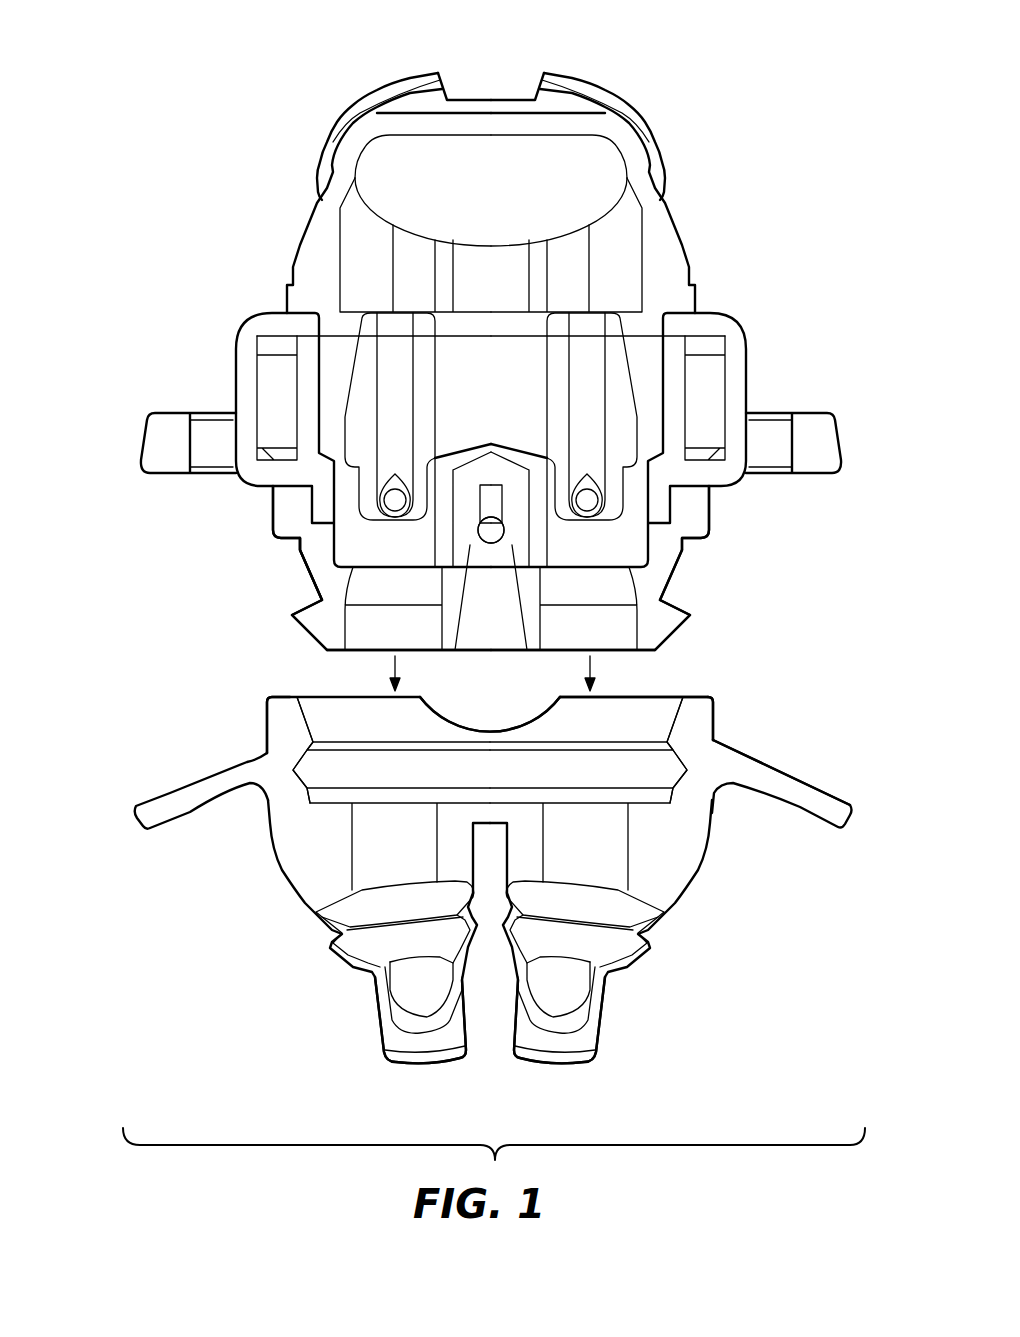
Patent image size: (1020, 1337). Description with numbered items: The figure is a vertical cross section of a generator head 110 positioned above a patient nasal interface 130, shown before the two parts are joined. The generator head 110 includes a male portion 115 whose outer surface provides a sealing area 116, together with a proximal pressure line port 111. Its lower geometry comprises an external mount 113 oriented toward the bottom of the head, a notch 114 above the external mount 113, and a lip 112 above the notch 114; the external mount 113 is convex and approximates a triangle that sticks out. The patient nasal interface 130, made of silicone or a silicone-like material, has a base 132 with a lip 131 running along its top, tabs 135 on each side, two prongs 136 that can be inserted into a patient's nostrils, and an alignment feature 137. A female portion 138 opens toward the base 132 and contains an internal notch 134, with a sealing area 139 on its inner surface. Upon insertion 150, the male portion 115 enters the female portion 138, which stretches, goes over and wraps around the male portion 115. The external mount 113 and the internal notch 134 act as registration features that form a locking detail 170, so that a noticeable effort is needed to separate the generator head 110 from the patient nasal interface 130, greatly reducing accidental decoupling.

The generator head 110 is at (731, 52).
The proximal pressure line port 111 is at (483, 637).
The lip 112 is at (698, 538).
The external mount 113 is at (692, 612).
The notch 114 is at (680, 566).
The male portion 115 is at (313, 650).
The sealing area 116 is at (304, 557).
The patient nasal interface 130 is at (757, 998).
The lip 131 is at (658, 697).
The base 132 is at (702, 710).
The internal notch 134 is at (711, 740).
The tabs 135 is at (141, 812).
The prongs 136 is at (378, 1052).
The alignment feature 137 is at (497, 722).
The female portion 138 is at (262, 806).
The sealing area 139 is at (267, 706).
The insertion 150 is at (592, 675).
The locking detail 170 is at (781, 622).